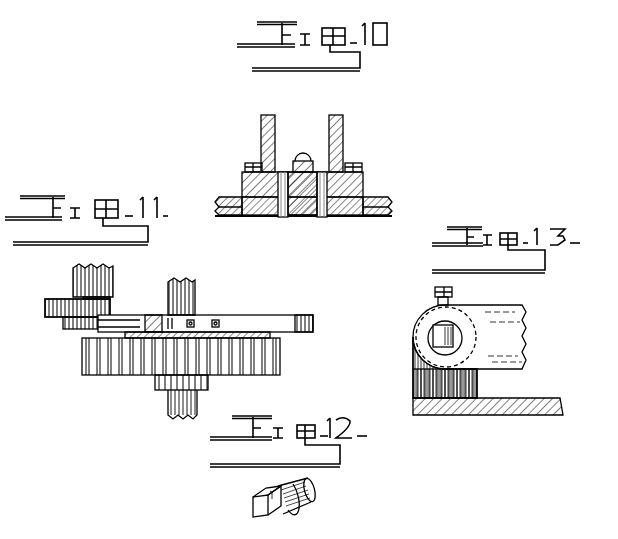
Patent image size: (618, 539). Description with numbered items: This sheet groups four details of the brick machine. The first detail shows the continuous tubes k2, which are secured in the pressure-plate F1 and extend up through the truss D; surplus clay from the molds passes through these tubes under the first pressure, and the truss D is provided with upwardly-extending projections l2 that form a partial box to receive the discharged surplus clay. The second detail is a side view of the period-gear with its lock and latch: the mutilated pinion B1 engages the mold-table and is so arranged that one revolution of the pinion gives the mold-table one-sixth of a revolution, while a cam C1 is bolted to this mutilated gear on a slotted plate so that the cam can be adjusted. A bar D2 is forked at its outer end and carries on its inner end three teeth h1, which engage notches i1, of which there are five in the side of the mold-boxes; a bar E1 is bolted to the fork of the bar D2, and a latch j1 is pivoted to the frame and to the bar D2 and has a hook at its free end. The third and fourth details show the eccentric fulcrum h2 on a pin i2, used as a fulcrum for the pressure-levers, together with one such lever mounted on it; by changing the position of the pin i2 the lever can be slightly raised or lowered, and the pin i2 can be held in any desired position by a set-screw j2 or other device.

In FIG. 10, the pressure-plate F1 is at (394, 216).
In FIG. 10, the upwardly-extending projections l2 is at (353, 130).
In FIG. 10, the tubes k2 is at (282, 218).
In FIG. 13, the tubes k2 is at (458, 353).
In FIG. 10, the truss D is at (300, 180).
In FIG. 11, the notches i1 is at (78, 297).
In FIG. 11, the latch j1 is at (63, 318).
In FIG. 11, the teeth h1 is at (78, 330).
In FIG. 11, the bar D2 is at (205, 315).
In FIG. 11, the bar E1 is at (298, 304).
In FIG. 11, the cam C1 is at (147, 332).
In FIG. 11, the mutilated pinion B1 is at (210, 360).
In FIG. 12, the pin i2 is at (263, 494).
In FIG. 13, the pin i2 is at (458, 328).
In FIG. 12, the eccentric fulcrum h2 is at (300, 505).
In FIG. 13, the set-screw j2 is at (437, 299).